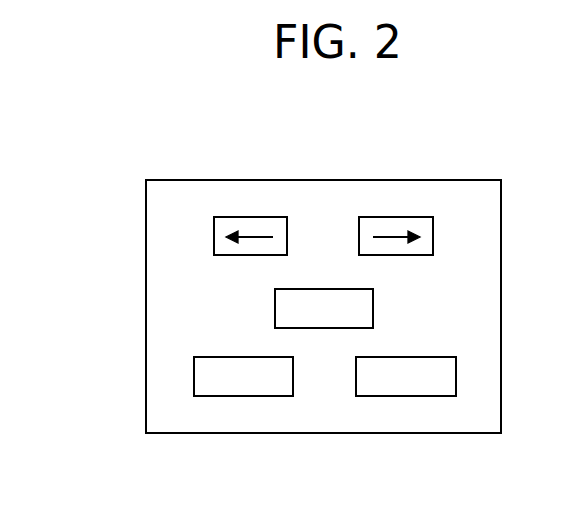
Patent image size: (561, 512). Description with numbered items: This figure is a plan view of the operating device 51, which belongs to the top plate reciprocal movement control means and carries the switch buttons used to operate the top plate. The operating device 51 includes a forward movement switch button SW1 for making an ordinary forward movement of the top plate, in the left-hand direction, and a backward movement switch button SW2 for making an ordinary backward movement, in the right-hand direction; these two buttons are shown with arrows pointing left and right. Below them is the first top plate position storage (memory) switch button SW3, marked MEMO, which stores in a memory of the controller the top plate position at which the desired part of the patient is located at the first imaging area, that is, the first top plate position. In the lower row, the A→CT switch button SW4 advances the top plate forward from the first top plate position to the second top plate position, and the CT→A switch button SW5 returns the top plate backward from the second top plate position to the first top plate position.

The operating device 51 is at (480, 193).
The forward movement switch button SW1 is at (247, 217).
The backward movement switch button SW2 is at (394, 217).
The first top plate position storage (memory) switch button SW3 is at (275, 304).
The A→CT switch button SW4 is at (250, 396).
The CT→A switch button SW5 is at (398, 396).